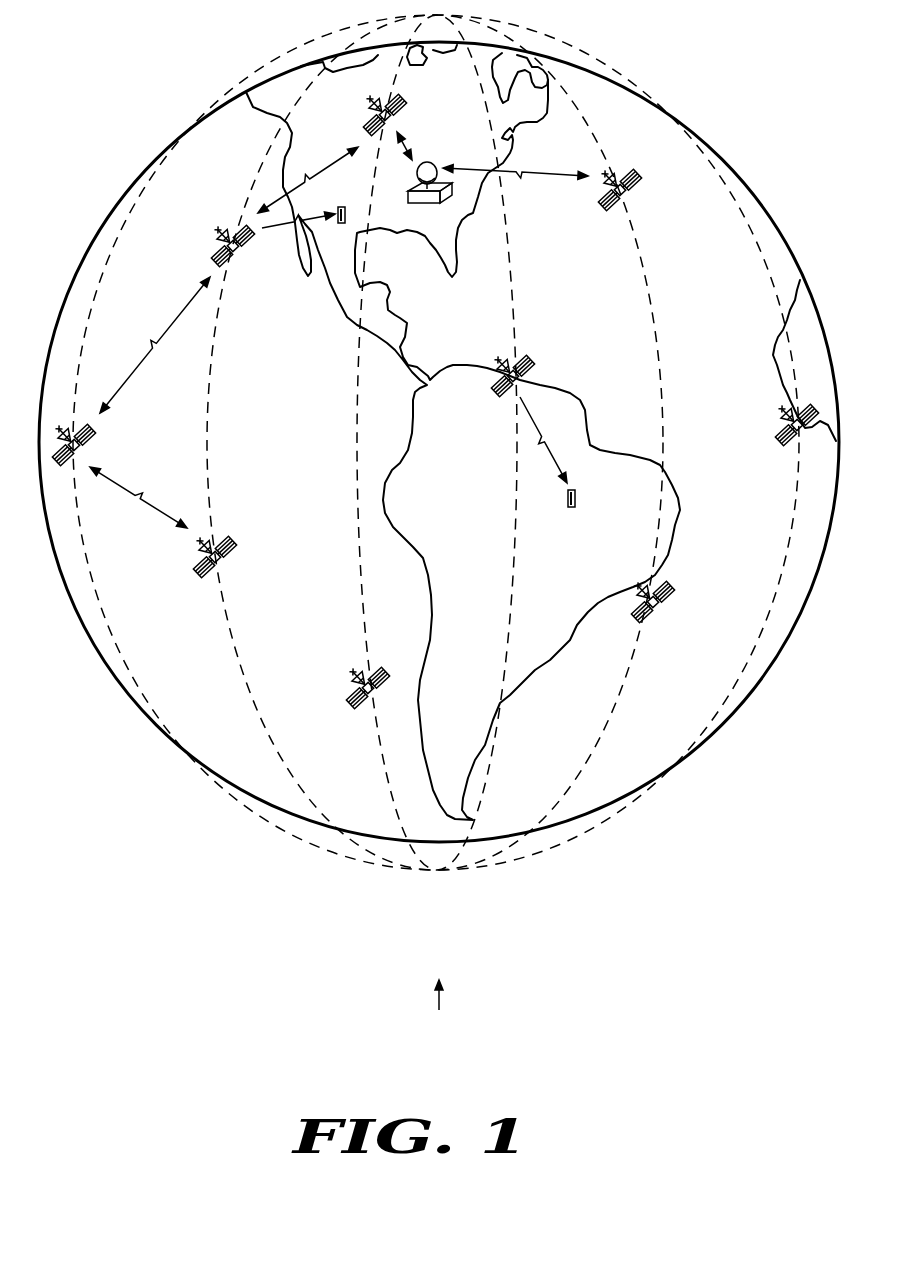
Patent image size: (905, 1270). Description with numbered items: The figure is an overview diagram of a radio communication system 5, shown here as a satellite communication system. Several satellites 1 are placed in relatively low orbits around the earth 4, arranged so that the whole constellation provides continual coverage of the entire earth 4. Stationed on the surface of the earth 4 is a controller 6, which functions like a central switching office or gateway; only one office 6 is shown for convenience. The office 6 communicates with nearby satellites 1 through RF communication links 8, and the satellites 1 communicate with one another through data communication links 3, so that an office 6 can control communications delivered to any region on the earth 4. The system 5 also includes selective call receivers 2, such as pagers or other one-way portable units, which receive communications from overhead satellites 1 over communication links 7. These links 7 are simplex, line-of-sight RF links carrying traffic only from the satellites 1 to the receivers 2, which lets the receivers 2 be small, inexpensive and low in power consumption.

The satellite 1 is at (640, 190).
The selective call receiver (SCR) 2 is at (349, 219).
The data communication link 3 is at (328, 167).
The earth 4 is at (62, 306).
The radio communication system 5 is at (439, 1013).
The controller (office) 6 is at (447, 198).
The communication link 7 is at (283, 224).
The RF communication link 8 is at (411, 144).